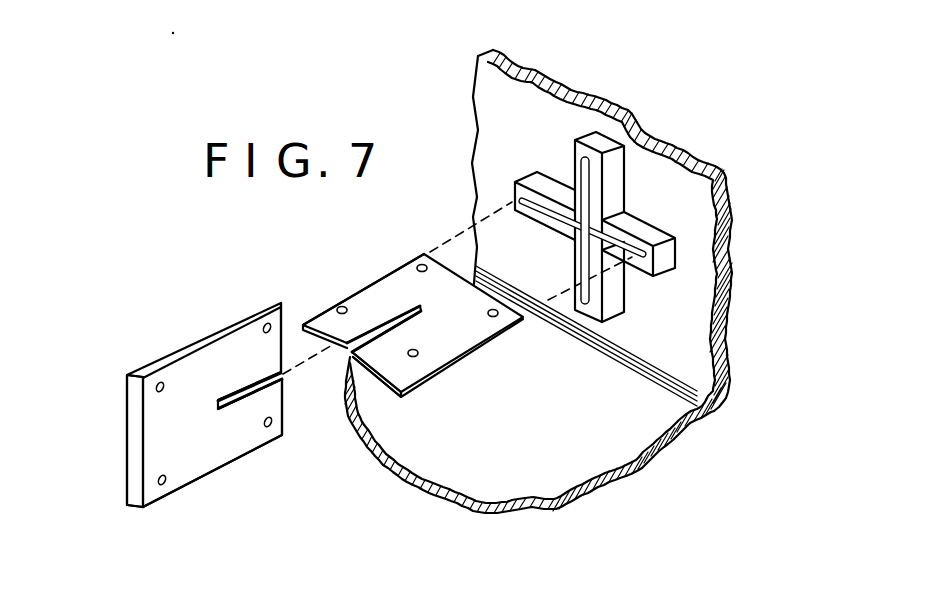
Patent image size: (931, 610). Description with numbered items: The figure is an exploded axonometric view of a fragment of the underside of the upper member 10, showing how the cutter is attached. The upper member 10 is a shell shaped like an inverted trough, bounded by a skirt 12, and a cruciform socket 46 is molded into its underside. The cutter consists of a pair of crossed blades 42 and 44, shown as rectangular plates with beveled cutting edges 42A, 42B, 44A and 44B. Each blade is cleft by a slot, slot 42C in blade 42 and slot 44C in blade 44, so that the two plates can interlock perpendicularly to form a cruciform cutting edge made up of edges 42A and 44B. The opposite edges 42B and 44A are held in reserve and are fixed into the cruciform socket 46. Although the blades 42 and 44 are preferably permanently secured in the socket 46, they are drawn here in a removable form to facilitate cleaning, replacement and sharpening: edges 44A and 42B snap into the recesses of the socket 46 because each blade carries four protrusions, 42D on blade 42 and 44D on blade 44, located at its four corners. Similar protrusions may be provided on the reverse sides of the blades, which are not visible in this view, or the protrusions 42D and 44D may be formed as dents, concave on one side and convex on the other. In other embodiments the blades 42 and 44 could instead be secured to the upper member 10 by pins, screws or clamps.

The upper member 10 is at (693, 315).
The skirt 12 is at (630, 440).
The blade 42 is at (170, 398).
The beveled cutting edge 42A is at (133, 422).
The beveled cutting edge 42B is at (285, 422).
The slot 42C is at (244, 374).
The protrusions 42D is at (155, 481).
The blade 44 is at (406, 329).
The beveled cutting edge 44A is at (540, 310).
The beveled cutting edge 44B is at (383, 372).
The slot 44C is at (414, 305).
The protrusions 44D is at (418, 356).
The cruciform socket 46 is at (620, 164).